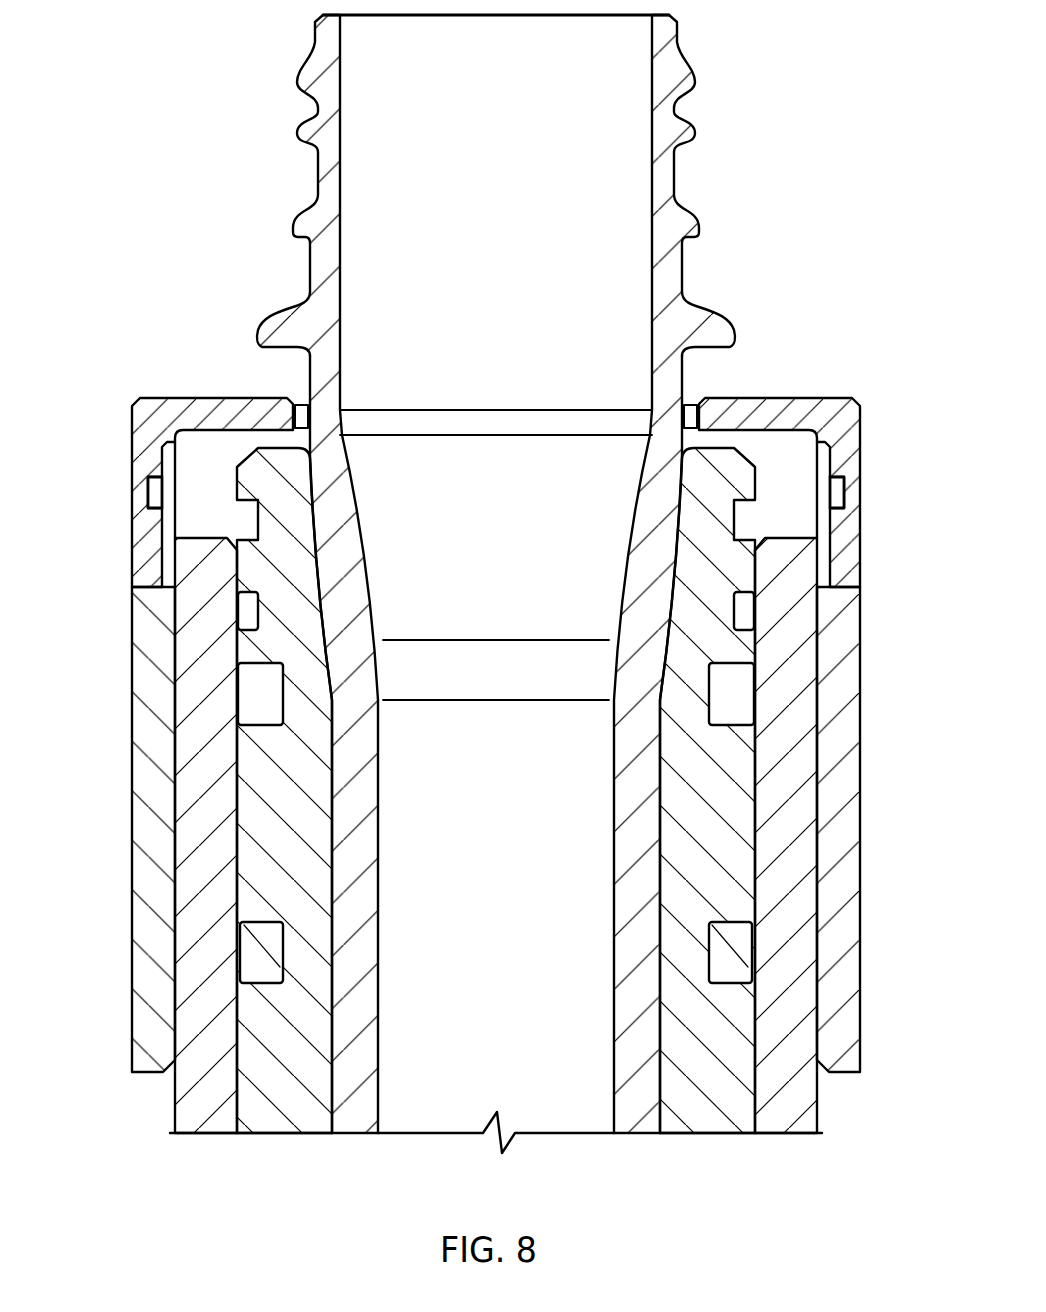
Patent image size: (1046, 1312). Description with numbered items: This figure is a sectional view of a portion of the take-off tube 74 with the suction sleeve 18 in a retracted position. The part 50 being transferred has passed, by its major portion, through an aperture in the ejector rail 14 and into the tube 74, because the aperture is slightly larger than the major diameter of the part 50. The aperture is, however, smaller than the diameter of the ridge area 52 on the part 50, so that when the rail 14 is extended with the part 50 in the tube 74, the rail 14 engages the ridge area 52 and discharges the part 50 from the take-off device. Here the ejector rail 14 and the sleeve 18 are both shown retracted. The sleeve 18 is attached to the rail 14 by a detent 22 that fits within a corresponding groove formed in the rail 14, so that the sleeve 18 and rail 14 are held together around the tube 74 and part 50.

The ejector rail 14 is at (851, 423).
The sleeve 18 is at (161, 663).
The detent 22 is at (841, 495).
The part 50 is at (674, 183).
The ridge area 52 is at (726, 330).
The tube 74 is at (275, 835).